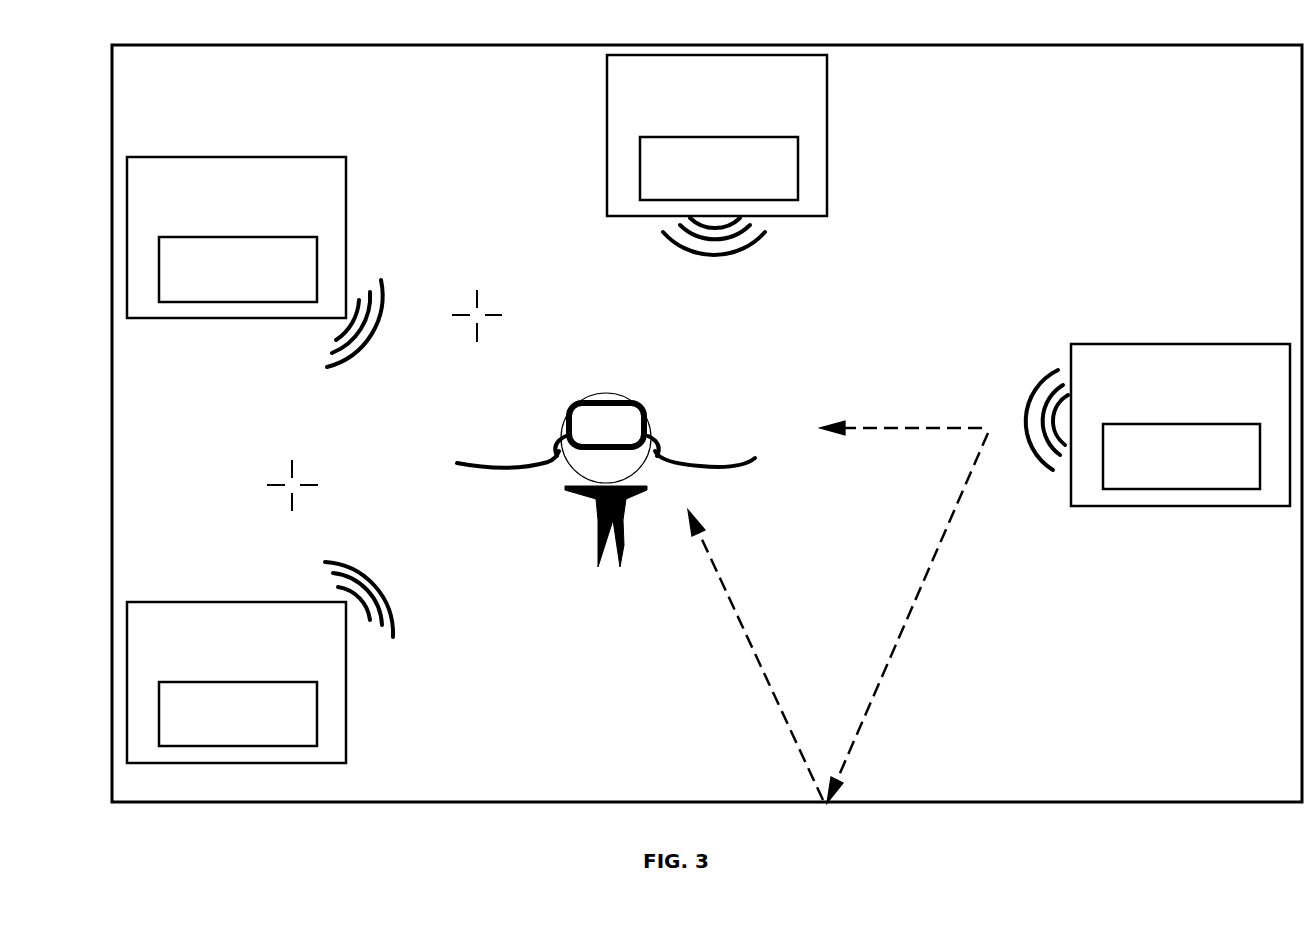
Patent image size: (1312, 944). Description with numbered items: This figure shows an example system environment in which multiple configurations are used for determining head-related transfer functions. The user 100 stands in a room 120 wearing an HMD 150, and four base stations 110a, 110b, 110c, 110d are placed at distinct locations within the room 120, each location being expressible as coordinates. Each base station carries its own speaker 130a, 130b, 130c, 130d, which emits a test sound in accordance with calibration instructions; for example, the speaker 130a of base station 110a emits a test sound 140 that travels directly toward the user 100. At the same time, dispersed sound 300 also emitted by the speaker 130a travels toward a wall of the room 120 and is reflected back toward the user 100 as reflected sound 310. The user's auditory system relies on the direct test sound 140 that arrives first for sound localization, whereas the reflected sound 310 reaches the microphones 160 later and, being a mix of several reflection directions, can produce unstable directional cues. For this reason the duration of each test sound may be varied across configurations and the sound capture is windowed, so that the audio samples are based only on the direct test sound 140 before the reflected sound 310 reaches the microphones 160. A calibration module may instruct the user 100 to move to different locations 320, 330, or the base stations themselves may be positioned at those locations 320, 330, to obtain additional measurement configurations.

The user 100 is at (593, 533).
The base station 110a is at (1155, 411).
The base station 110b is at (211, 223).
The base station 110c is at (692, 121).
The base station 110d is at (211, 669).
The room 120 is at (191, 116).
The speaker 130a is at (1156, 480).
The speaker 130b is at (213, 293).
The speaker 130c is at (694, 192).
The speaker 130d is at (213, 738).
The test sound 140 is at (900, 417).
The HMD 150 is at (611, 402).
The microphones 160 is at (601, 454).
The dispersed sound 300 is at (913, 634).
The reflected sound 310 is at (770, 715).
The location 320 is at (497, 301).
The location 330 is at (312, 472).